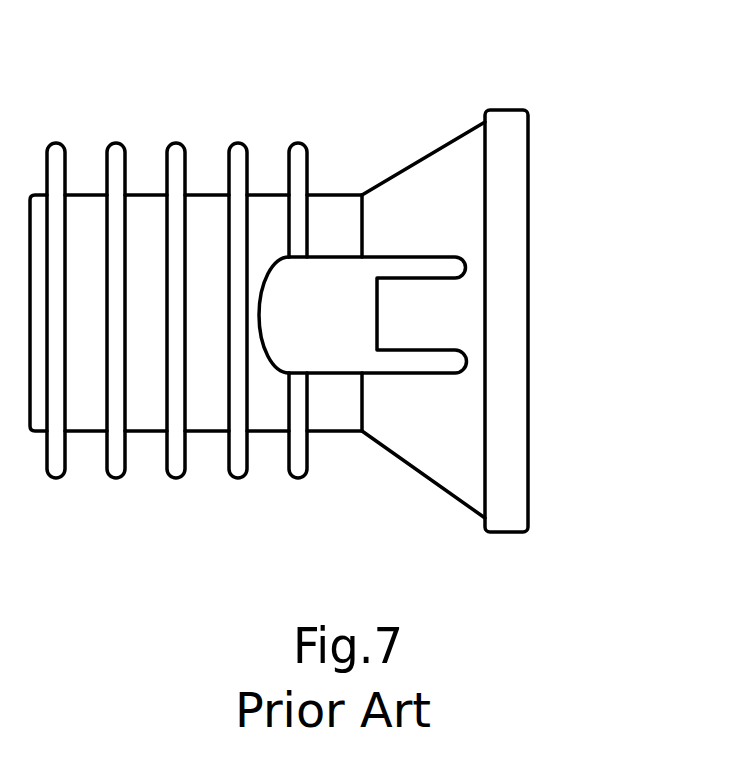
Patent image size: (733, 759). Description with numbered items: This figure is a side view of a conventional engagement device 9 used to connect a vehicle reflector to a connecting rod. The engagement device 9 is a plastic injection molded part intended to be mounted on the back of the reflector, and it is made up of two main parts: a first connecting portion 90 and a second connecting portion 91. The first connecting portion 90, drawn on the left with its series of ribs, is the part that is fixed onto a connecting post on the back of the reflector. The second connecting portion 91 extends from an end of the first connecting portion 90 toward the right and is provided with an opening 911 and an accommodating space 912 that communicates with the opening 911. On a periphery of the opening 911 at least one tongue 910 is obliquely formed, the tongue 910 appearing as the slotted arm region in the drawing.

The engagement device 9 is at (372, 317).
The first connecting portion 90 is at (263, 413).
The second connecting portion 91 is at (538, 353).
The tongue 910 is at (458, 312).
The opening 911 is at (555, 175).
The accommodating space 912 is at (340, 357).